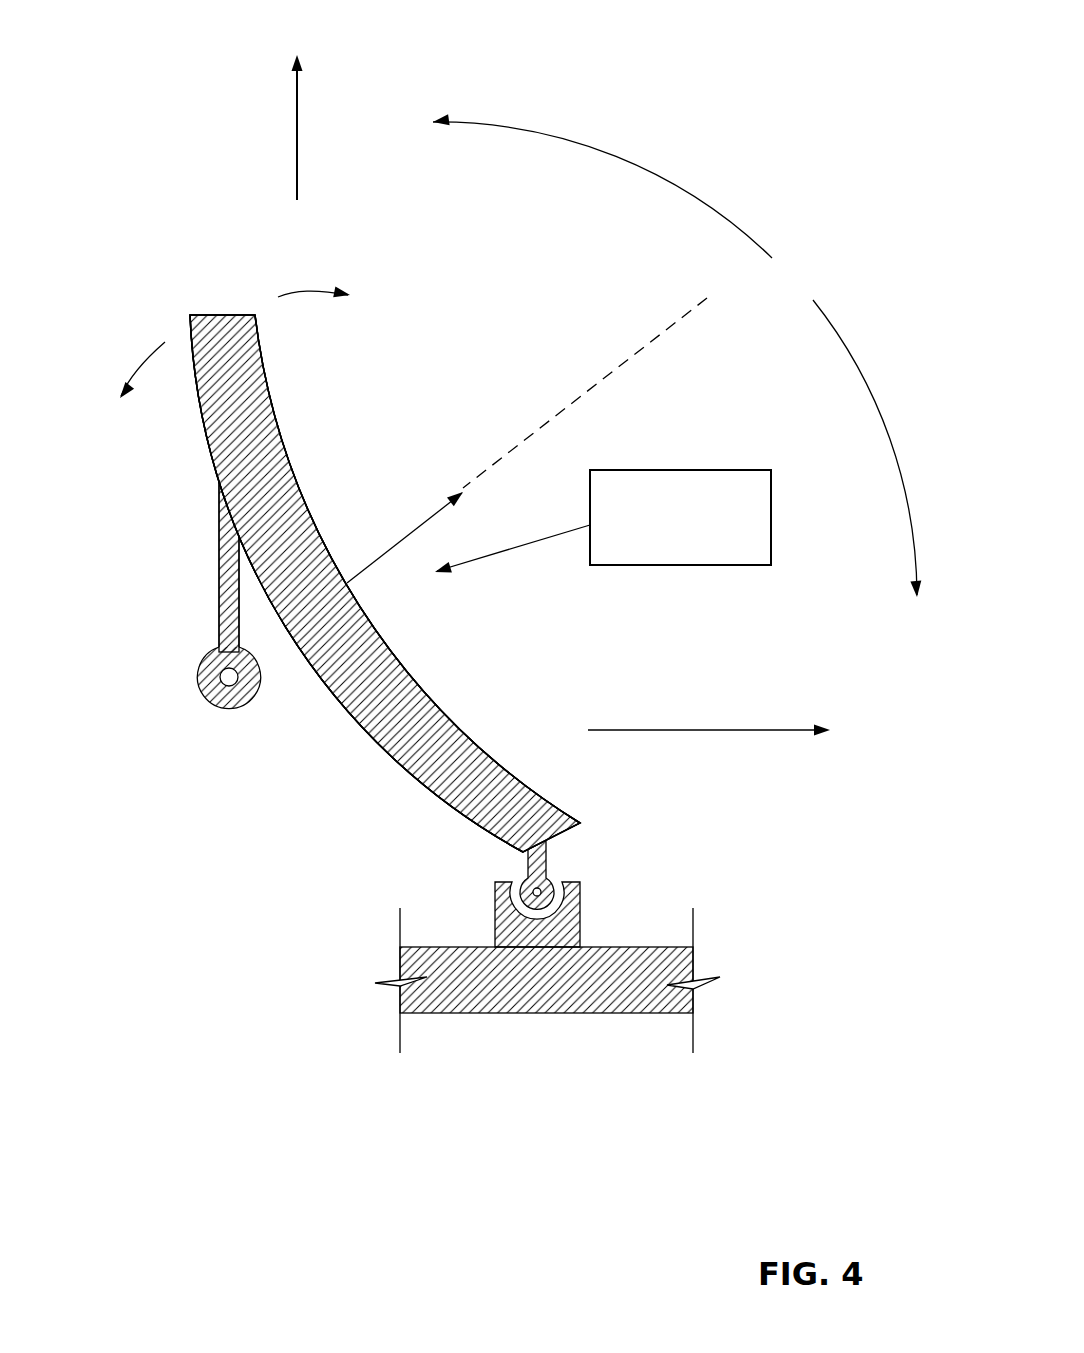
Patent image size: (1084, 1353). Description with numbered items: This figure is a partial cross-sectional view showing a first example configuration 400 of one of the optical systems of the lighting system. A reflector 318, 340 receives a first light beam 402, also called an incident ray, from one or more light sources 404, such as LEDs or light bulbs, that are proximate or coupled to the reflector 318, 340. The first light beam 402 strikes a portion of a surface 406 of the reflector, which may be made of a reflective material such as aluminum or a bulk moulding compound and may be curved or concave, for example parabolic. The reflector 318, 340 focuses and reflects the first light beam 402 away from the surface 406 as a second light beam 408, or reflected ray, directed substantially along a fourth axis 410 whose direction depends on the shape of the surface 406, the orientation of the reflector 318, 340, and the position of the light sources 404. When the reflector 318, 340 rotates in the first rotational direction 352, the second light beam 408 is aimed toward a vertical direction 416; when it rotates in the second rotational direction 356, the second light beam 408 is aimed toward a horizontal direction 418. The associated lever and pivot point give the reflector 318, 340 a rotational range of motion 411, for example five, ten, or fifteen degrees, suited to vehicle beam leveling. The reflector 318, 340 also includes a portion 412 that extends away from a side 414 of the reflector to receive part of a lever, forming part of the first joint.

The first example configuration 400 is at (797, 66).
The reflector 318 is at (190, 315).
The reflector 340 is at (190, 315).
The first rotational direction 352 is at (143, 360).
The second rotational direction 356 is at (313, 291).
The first light beam 402 is at (508, 554).
The light sources 404 is at (771, 470).
The surface 406 is at (401, 665).
The second light beam 408 is at (395, 546).
The fourth axis 410 is at (603, 380).
The rotational range of motion 411 is at (806, 266).
The portion 412 is at (219, 576).
The side 414 is at (332, 692).
The vertical direction 416 is at (296, 133).
The horizontal direction 418 is at (705, 731).